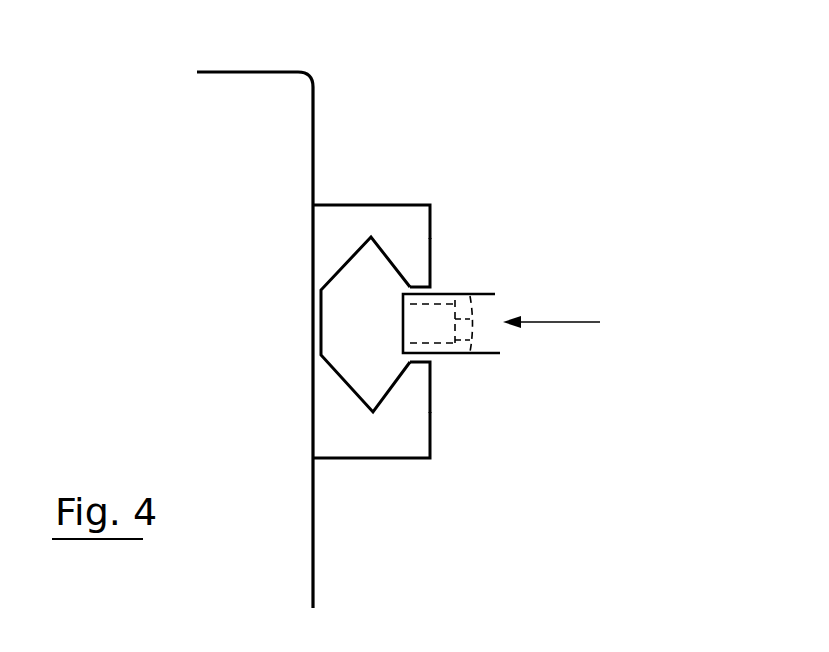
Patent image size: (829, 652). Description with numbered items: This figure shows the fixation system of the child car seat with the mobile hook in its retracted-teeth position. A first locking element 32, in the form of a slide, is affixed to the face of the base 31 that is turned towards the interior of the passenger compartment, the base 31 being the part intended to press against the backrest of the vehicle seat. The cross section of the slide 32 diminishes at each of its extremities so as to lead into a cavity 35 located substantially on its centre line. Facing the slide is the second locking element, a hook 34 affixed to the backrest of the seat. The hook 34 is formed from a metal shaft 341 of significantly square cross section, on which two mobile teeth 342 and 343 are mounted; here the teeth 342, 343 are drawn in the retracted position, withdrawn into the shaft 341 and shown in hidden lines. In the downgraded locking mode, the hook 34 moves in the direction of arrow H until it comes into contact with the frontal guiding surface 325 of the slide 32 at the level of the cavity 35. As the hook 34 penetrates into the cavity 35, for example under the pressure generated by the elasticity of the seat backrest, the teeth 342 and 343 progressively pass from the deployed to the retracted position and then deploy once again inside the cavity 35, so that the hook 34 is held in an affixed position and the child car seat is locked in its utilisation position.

The base 31 is at (266, 113).
The first locking element 32 is at (350, 440).
The cavity 35 is at (355, 267).
The frontal guiding surface 325 is at (432, 238).
The hook 34 is at (427, 327).
The shaft 341 is at (487, 293).
The mobile tooth 342 is at (462, 293).
The mobile tooth 343 is at (465, 357).
The direction of hook movement H is at (568, 320).